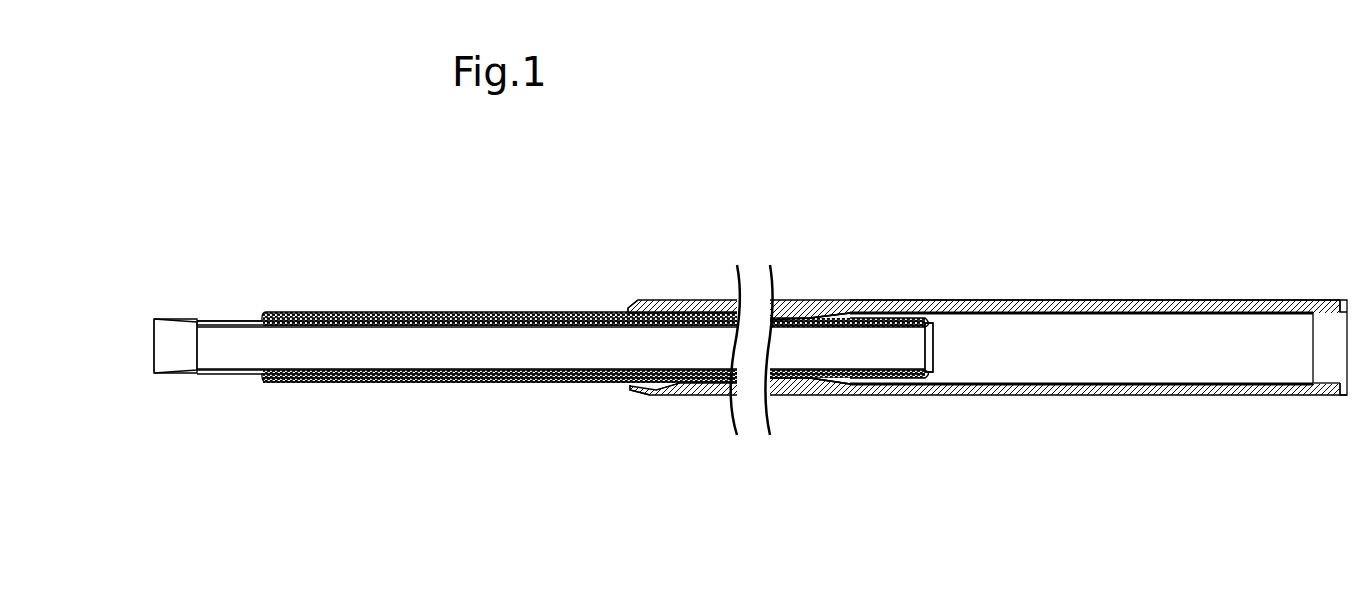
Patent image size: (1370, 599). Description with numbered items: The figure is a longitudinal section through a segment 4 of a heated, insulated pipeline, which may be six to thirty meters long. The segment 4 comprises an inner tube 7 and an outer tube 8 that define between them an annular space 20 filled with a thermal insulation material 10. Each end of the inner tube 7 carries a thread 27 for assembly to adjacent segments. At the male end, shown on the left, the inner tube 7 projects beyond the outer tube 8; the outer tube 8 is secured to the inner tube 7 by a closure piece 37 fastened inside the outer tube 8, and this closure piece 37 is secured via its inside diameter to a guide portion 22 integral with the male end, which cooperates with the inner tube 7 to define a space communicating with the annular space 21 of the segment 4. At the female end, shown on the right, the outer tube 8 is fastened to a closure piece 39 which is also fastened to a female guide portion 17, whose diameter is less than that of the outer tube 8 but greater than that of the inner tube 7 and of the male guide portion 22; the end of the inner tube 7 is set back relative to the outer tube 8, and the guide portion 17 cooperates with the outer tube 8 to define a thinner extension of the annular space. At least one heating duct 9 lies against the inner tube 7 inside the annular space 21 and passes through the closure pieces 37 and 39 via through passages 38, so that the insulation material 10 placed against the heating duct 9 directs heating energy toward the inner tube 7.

The segment 4 is at (293, 206).
The inner tube 7 is at (303, 376).
The outer tube 8 is at (648, 298).
The heating duct 9 is at (672, 393).
The thermal insulation material 10 is at (333, 320).
The female guide portion 17 is at (1068, 313).
The annular space 20 is at (1112, 305).
The annular space 21 is at (808, 320).
The male guide portion 22 is at (413, 381).
The thread 27 is at (193, 320).
The closure piece 37 is at (630, 305).
The through passage 38 is at (640, 396).
The closure piece 39 is at (1340, 298).